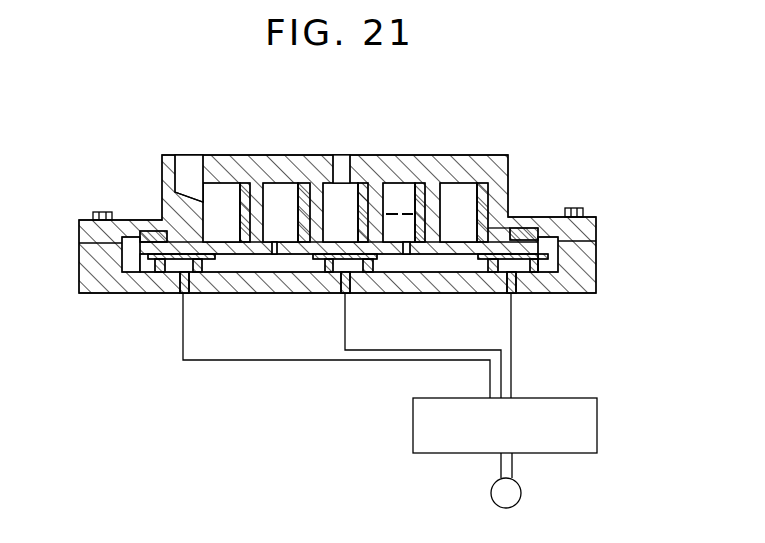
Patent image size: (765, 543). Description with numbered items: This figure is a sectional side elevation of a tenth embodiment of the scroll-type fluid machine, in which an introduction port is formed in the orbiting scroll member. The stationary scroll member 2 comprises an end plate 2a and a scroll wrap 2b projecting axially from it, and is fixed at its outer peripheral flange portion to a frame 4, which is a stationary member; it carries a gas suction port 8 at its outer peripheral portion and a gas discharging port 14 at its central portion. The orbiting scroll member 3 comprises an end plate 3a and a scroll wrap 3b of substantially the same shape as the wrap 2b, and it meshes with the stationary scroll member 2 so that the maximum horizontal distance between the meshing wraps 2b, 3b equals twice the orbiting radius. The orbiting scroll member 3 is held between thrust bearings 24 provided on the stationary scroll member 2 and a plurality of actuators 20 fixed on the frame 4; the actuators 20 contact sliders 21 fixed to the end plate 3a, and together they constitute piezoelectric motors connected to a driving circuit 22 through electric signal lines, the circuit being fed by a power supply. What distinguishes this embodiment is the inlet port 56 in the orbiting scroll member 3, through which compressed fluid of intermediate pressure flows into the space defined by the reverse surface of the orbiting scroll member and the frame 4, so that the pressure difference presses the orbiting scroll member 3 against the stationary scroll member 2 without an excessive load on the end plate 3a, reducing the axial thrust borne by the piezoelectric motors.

The stationary scroll member 2 is at (260, 166).
The end plate 2a is at (288, 185).
The scroll wrap 2b is at (262, 200).
The orbiting scroll member 3 is at (454, 166).
The end plate 3a is at (455, 238).
The scroll wrap 3b is at (498, 179).
The frame 4 is at (97, 283).
The gas suction port 8 is at (186, 173).
The gas discharging port 14 is at (340, 173).
The actuator 20 is at (163, 262).
The slider 21 is at (145, 262).
The driving circuit 22 is at (597, 432).
The thrust bearing 24 is at (148, 232).
The inlet port 56 is at (258, 257).